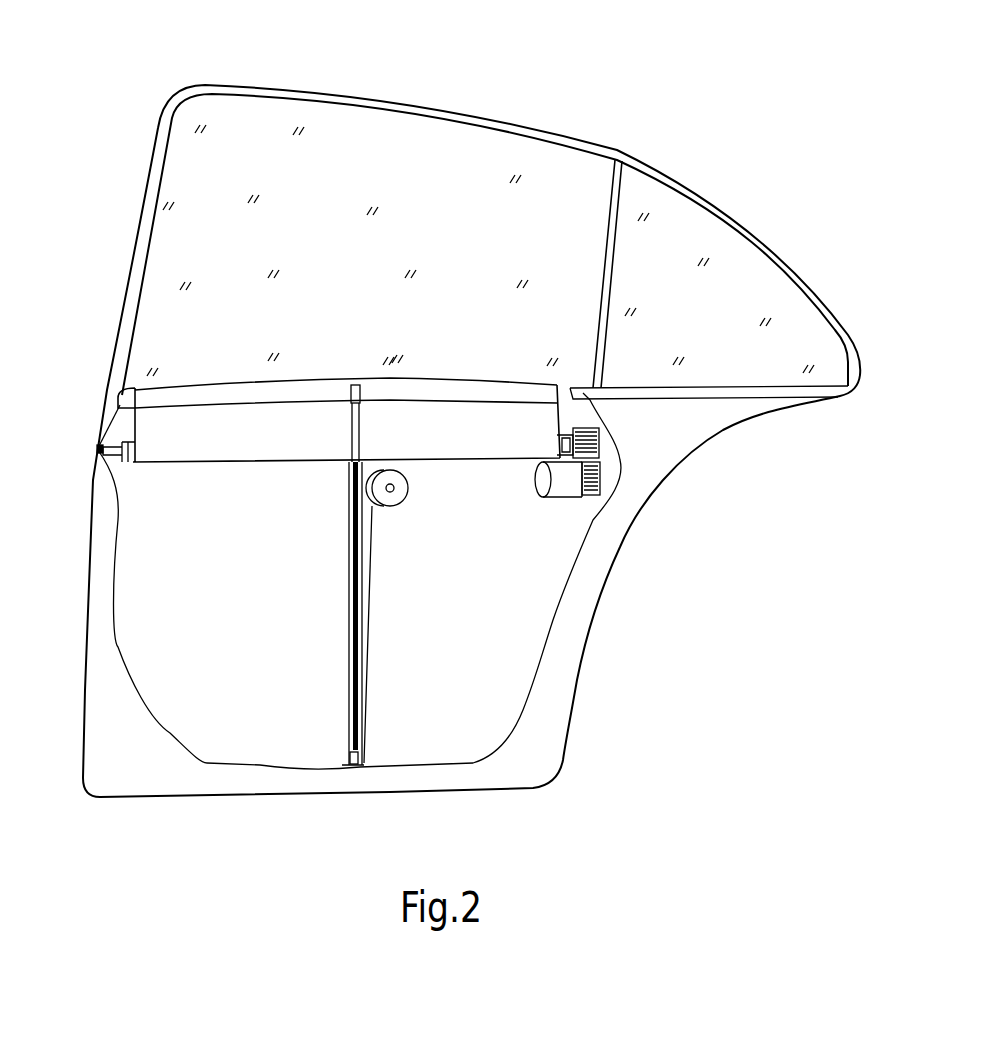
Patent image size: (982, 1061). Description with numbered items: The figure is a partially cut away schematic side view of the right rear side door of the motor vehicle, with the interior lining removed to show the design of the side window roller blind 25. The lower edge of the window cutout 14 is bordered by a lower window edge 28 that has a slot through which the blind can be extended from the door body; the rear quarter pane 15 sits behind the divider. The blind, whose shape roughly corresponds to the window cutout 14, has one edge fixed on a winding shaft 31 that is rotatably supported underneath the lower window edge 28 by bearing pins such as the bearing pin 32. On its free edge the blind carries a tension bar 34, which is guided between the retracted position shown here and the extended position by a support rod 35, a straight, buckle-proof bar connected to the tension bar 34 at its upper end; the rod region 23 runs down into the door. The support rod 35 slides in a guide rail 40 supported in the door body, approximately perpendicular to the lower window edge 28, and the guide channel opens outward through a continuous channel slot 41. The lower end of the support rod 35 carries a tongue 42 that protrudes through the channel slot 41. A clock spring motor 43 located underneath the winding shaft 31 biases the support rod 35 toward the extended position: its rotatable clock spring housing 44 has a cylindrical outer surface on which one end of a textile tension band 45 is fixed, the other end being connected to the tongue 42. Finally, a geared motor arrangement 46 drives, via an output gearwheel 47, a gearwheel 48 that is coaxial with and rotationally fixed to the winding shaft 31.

The window cutout 14 is at (442, 175).
The rear window pane 15 is at (687, 230).
The side window roller blind 25 is at (440, 355).
The tension bar 34 is at (207, 386).
The guide rail 23 is at (338, 430).
The support rod 35 is at (350, 442).
The bearing pin 32 is at (98, 447).
The winding shaft 31 is at (100, 450).
The lower window edge 28 is at (683, 387).
The guide rail 40 is at (343, 620).
The channel slot 41 is at (347, 503).
The tongue 42 is at (342, 766).
The tension band 45 is at (365, 598).
The clock spring housing 44 is at (393, 502).
The clock spring motor 43 is at (420, 493).
The geared motor arrangement 46 is at (558, 503).
The output gearwheel 47 is at (600, 483).
The gearwheel 48 is at (597, 442).